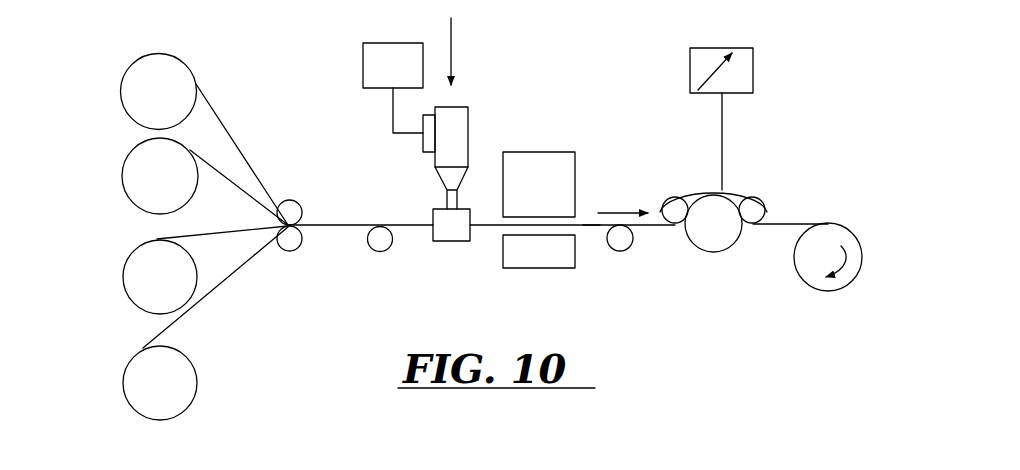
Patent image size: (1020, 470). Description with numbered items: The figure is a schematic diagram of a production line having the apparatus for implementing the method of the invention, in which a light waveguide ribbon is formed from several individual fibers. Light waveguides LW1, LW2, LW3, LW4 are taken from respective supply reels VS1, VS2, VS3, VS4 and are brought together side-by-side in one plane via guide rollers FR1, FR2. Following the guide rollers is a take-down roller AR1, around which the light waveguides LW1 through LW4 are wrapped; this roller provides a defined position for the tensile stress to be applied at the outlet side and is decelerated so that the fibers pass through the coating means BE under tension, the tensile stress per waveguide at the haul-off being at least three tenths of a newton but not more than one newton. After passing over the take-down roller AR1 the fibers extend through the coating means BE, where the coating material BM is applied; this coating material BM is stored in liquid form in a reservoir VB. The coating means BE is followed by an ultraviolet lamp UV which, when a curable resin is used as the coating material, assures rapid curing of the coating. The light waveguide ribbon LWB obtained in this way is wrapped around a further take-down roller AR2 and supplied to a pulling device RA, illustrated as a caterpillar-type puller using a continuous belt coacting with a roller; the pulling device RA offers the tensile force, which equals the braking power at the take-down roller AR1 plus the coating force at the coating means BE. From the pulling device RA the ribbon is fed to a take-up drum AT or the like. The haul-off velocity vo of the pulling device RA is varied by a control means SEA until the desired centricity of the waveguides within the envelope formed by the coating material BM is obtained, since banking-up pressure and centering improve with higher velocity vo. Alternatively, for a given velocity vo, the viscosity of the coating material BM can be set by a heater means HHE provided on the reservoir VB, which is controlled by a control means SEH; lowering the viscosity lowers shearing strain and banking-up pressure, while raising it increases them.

The supply reel VS1 is at (145, 83).
The supply reel VS2 is at (142, 173).
The supply reel VS3 is at (155, 282).
The supply reel VS4 is at (158, 390).
The light waveguide LW1 is at (243, 158).
The light waveguide LW2 is at (222, 178).
The light waveguide LW3 is at (193, 235).
The light waveguide LW4 is at (210, 288).
The guide roller FR1 is at (285, 208).
The guide roller FR2 is at (290, 242).
The take-down roller AR1 is at (382, 245).
The further take-down roller AR2 is at (618, 240).
The control means SEH is at (388, 55).
The heater means HHE is at (427, 152).
The reservoir VB is at (450, 130).
The coating material BM is at (452, 37).
The coating means BE is at (448, 235).
The ultraviolet lamp UV is at (545, 173).
The light waveguide ribbon LWB is at (583, 225).
The haul-off velocity vo is at (605, 213).
The control means SEA is at (748, 77).
The pulling device RA is at (748, 158).
The take-up drum AT is at (812, 265).